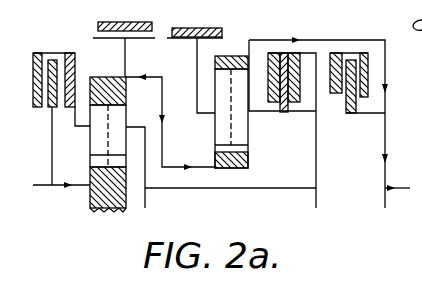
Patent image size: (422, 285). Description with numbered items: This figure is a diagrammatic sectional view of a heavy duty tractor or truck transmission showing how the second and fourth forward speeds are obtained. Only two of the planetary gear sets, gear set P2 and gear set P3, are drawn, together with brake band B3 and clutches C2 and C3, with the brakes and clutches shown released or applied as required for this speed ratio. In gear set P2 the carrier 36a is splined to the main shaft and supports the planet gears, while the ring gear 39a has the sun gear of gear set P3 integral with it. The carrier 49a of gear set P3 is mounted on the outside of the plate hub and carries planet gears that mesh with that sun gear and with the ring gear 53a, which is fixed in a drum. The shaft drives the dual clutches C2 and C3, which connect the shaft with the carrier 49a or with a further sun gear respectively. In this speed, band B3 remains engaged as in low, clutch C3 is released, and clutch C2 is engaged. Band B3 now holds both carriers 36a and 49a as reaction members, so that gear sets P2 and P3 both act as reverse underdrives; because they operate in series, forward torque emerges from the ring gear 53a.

The gear set P2 is at (85, 68).
The ring gear 39a is at (115, 63).
The carrier 36a is at (170, 122).
The brake band B3 is at (218, 19).
The ring gear 53a is at (228, 56).
The gear set P3 is at (207, 143).
The carrier 49a is at (263, 112).
The clutch C2 is at (275, 53).
The clutch C3 is at (342, 53).